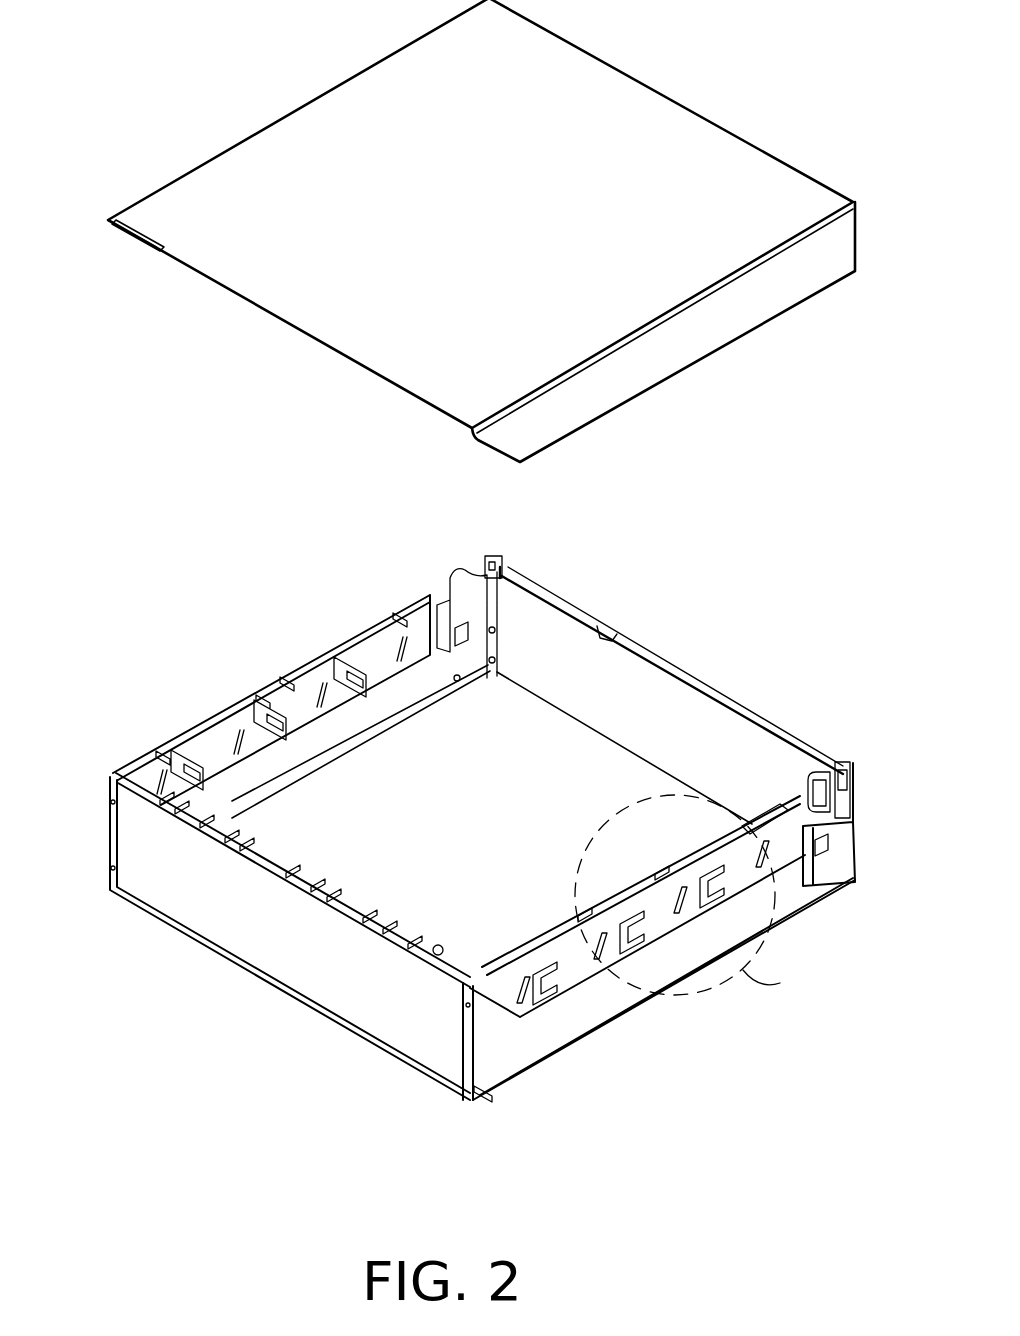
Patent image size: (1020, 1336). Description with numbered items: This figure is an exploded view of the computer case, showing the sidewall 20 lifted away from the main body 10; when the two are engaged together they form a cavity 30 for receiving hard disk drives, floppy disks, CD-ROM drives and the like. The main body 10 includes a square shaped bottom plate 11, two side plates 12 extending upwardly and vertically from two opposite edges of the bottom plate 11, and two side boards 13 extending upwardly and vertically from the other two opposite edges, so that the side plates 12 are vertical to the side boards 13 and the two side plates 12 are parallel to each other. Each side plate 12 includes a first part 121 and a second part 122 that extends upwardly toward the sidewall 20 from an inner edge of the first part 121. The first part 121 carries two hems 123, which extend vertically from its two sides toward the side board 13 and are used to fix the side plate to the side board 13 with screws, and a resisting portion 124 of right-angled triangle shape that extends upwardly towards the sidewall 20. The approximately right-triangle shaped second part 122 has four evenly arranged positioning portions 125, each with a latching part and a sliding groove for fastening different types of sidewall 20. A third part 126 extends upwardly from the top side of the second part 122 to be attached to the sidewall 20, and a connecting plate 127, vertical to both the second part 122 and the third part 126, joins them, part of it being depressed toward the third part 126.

The main body 10 is at (494, 855).
The bottom plate 11 is at (530, 725).
The side plate 12 is at (612, 918).
The first part 121 is at (588, 1012).
The second part 122 is at (778, 855).
The hem 123 is at (467, 1047).
The resisting portion 124 is at (487, 1093).
The positioning portion 125 is at (642, 923).
The third part 126 is at (767, 812).
The connecting plate 127 is at (782, 815).
The side board 13 is at (210, 903).
The sidewall 20 is at (328, 146).
The cavity 30 is at (270, 773).